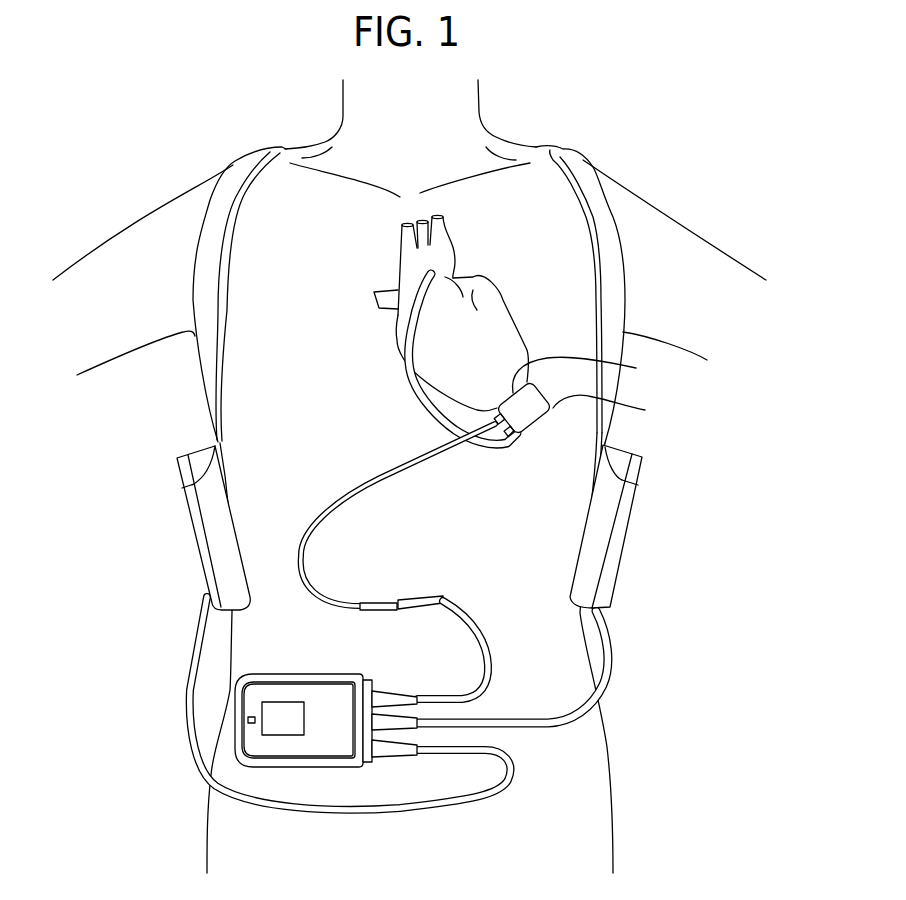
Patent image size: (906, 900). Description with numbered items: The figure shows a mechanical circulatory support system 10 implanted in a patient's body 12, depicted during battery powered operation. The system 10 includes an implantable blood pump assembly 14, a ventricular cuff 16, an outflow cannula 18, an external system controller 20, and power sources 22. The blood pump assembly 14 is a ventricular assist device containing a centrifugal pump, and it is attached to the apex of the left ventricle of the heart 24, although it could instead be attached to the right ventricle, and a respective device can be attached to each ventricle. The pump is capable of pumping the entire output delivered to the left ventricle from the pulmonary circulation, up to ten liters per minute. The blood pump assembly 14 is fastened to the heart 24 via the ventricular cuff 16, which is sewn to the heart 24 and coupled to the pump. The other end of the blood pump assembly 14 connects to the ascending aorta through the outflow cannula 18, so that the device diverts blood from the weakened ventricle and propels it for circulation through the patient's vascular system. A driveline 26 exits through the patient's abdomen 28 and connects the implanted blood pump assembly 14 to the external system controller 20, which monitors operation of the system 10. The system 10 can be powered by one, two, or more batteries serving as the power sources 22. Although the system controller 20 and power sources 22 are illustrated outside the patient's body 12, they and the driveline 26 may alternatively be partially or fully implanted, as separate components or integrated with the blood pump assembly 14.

The mechanical circulatory support system 10 is at (700, 414).
The patient's body 12 is at (157, 228).
The implantable blood pump assembly 14 is at (579, 410).
The ventricular cuff 16 is at (585, 382).
The outflow cannula 18 is at (412, 327).
The external system controller 20 is at (292, 760).
The power sources 22 is at (193, 507).
The heart 24 is at (497, 347).
The driveline 26 is at (381, 476).
The patient's abdomen 28 is at (378, 604).